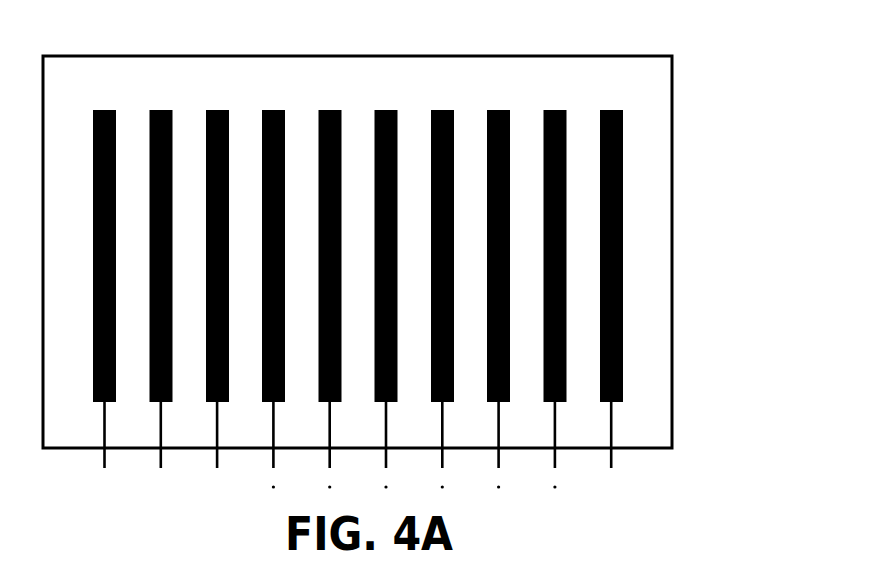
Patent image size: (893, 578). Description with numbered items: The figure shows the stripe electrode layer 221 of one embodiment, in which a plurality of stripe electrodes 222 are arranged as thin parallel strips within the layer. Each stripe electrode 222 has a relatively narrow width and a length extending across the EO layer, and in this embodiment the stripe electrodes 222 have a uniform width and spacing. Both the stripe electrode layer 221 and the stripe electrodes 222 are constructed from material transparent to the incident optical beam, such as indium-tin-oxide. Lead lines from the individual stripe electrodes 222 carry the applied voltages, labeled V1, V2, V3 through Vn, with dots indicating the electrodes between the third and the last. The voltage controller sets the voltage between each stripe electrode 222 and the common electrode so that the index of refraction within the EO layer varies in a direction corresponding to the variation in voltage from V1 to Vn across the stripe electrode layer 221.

The stripe electrode layer 221 is at (649, 307).
The stripe electrodes 222 is at (590, 84).
The electrode driven by voltage V1 is at (108, 307).
The electrode driven by voltage V2 is at (164, 307).
The electrode driven by voltage V3 is at (220, 307).
The electrode driven by voltage Vn is at (614, 307).